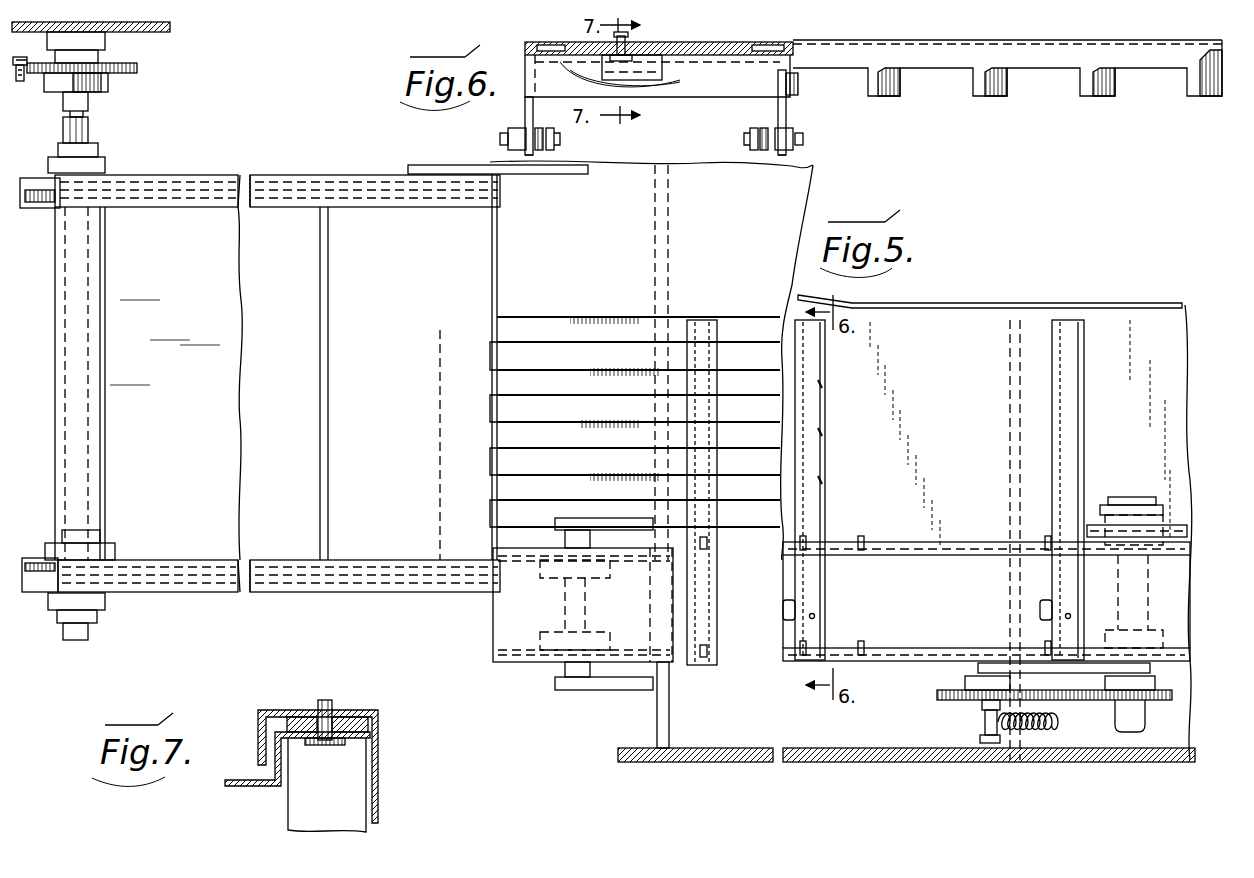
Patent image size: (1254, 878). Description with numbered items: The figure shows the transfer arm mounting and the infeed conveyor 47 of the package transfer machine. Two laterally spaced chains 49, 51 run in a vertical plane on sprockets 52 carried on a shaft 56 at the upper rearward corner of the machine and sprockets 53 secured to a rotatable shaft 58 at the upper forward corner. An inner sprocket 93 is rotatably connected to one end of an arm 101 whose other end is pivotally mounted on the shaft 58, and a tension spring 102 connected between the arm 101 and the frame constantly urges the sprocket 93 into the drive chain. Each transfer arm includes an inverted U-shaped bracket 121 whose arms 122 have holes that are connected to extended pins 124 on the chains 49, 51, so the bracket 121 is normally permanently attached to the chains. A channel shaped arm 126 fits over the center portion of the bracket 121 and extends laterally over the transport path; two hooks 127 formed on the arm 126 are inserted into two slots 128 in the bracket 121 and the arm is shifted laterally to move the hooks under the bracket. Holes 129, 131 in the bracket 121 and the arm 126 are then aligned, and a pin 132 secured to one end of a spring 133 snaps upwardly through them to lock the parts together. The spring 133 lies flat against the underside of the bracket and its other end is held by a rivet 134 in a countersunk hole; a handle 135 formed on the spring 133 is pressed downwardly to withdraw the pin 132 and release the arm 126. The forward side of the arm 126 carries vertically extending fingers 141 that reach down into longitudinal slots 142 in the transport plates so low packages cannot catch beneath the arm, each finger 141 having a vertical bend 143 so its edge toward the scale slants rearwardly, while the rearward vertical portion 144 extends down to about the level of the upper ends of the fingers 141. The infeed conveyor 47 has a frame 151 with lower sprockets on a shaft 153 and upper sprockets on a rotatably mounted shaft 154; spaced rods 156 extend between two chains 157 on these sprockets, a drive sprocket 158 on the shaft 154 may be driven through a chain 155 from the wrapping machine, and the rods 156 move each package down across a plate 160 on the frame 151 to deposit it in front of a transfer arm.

In FIG. 5, the infeed conveyor 47 is at (236, 614).
In FIG. 5, the chain 49 is at (925, 648).
In FIG. 6, the chain 49 is at (556, 145).
In FIG. 5, the chain 51 is at (905, 552).
In FIG. 6, the chain 51 is at (752, 150).
In FIG. 5, the sprocket 52 is at (530, 560).
In FIG. 5, the sprocket 53 is at (1178, 645).
In FIG. 5, the shaft 56 is at (585, 612).
In FIG. 5, the shaft 58 is at (1135, 606).
In FIG. 5, the inner sprocket 93 is at (978, 702).
In FIG. 5, the arm 101 is at (978, 666).
In FIG. 5, the tension spring 102 is at (1060, 721).
In FIG. 6, the inverted U-shaped bracket 121 is at (794, 115).
In FIG. 7, the inverted U-shaped bracket 121 is at (358, 790).
In FIG. 6, the arm 122 is at (525, 108).
In FIG. 6, the extended pin 124 is at (500, 139).
In FIG. 5, the channel shaped arm 126 is at (828, 474).
In FIG. 6, the channel shaped arm 126 is at (935, 78).
In FIG. 7, the channel shaped arm 126 is at (386, 752).
In FIG. 6, the hook 127 is at (537, 47).
In FIG. 6, the slot 128 is at (762, 50).
In FIG. 6, the hole 129 is at (805, 140).
In FIG. 7, the hole 129 is at (342, 717).
In FIG. 7, the hole 131 is at (322, 700).
In FIG. 5, the pin 132 is at (810, 616).
In FIG. 6, the pin 132 is at (628, 50).
In FIG. 7, the pin 132 is at (326, 748).
In FIG. 6, the spring 133 is at (683, 56).
In FIG. 7, the spring 133 is at (288, 750).
In FIG. 6, the rivet 134 is at (730, 53).
In FIG. 5, the handle 135 is at (795, 607).
In FIG. 6, the handle 135 is at (645, 78).
In FIG. 7, the handle 135 is at (253, 790).
In FIG. 6, the finger 141 is at (1086, 90).
In FIG. 5, the slot 142 is at (745, 316).
In FIG. 5, the bend 143 is at (826, 428).
In FIG. 6, the bend 143 is at (986, 90).
In FIG. 5, the rearward vertical portion 144 is at (682, 413).
In FIG. 7, the rearward vertical portion 144 is at (260, 740).
In FIG. 5, the frame 151 is at (280, 175).
In FIG. 5, the shaft 153 is at (440, 450).
In FIG. 5, the shaft 154 is at (82, 357).
In FIG. 5, the chain 155 is at (22, 78).
In FIG. 5, the rod 156 is at (108, 266).
In FIG. 5, the chain 157 is at (290, 195).
In FIG. 5, the drive sprocket 158 is at (128, 72).
In FIG. 5, the plate 160 is at (245, 432).